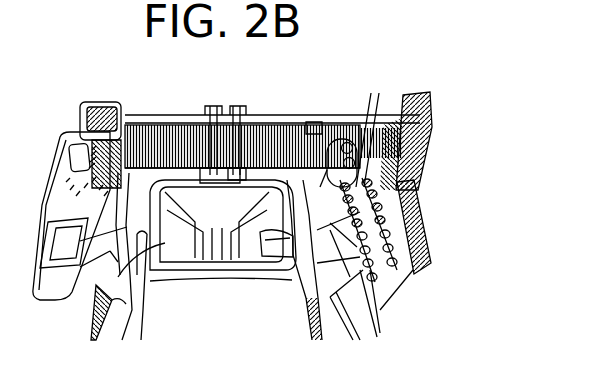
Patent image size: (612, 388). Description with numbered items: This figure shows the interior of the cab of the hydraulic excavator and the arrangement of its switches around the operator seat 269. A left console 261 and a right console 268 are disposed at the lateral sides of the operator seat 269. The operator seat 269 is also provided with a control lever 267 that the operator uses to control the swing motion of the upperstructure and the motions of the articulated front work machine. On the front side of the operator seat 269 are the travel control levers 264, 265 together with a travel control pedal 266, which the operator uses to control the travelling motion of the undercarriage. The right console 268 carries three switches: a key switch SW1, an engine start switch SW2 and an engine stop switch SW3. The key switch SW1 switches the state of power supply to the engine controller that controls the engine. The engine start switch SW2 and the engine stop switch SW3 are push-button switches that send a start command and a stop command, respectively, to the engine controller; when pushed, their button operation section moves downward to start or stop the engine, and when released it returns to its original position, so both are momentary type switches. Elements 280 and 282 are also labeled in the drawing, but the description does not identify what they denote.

The left console 261 is at (56, 186).
The steering bar 280 is at (207, 165).
The left end block 282 is at (133, 153).
The travel control lever 264 is at (211, 105).
The travel control lever 265 is at (238, 105).
The travel control pedal 266 is at (236, 162).
The control lever 267 is at (315, 127).
The right console 268 is at (407, 189).
The operator seat 269 is at (284, 296).
The key switch SW1 is at (421, 263).
The engine start switch SW2 is at (423, 153).
The engine stop switch SW3 is at (416, 123).